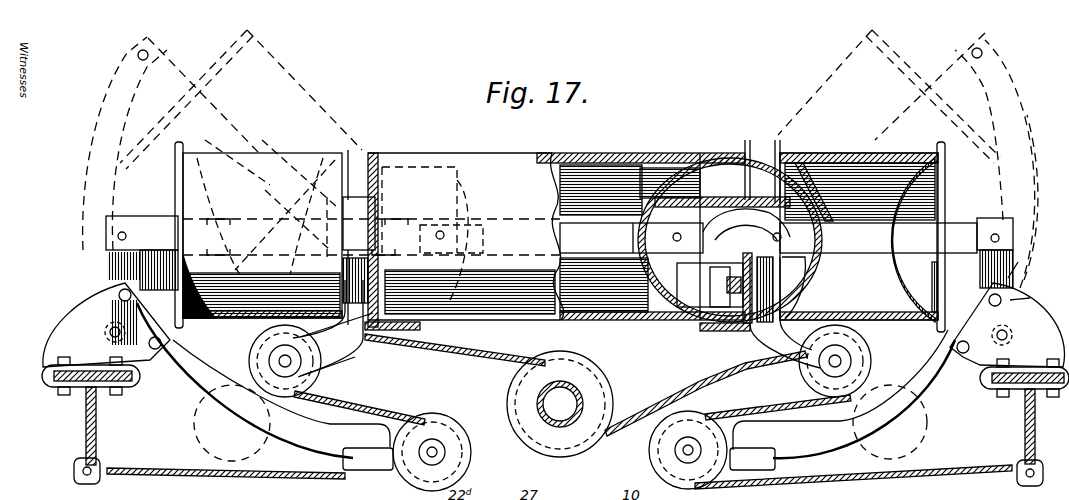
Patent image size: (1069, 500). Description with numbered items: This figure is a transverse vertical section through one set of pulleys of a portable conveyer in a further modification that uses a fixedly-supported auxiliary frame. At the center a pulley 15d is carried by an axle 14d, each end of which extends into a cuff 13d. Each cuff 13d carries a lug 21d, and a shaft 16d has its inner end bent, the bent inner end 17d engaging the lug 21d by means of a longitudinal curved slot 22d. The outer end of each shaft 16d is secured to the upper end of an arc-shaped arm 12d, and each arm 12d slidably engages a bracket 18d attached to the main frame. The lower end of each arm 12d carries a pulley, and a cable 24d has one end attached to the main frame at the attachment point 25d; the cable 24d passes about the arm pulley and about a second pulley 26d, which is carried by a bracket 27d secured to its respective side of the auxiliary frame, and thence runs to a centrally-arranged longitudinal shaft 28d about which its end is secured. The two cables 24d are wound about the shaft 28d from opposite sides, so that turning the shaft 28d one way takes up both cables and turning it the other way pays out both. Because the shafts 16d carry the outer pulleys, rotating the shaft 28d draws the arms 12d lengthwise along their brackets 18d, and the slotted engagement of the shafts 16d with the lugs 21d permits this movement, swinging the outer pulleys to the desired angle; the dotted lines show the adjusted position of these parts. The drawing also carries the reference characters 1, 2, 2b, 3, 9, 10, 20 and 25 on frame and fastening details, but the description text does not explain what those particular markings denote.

The hanger bar 1 is at (97, 418).
The bolt 2 is at (558, 357).
The pin 2b is at (800, 350).
The bottom plate 3 is at (421, 328).
The bracket lug 9 is at (1025, 293).
The guide roller 10 is at (1040, 300).
The arc-shaped arm 12d is at (106, 262).
The cuff 13d is at (352, 200).
The axle 14d is at (610, 250).
The central pulley 15d is at (566, 240).
The shaft 16d is at (168, 215).
The bent inner end 17d is at (680, 158).
The bracket 18d is at (554, 325).
The drum 20 is at (268, 198).
The lug 21d is at (312, 226).
The longitudinal curved slot 22d is at (768, 128).
The cable 24d is at (478, 352).
The post 25 is at (725, 302).
The cable attachment point on main frame 25d is at (559, 396).
The second pulley 26d is at (250, 356).
The bracket 27d is at (355, 340).
The centrally-arranged longitudinal shaft 28d is at (572, 385).